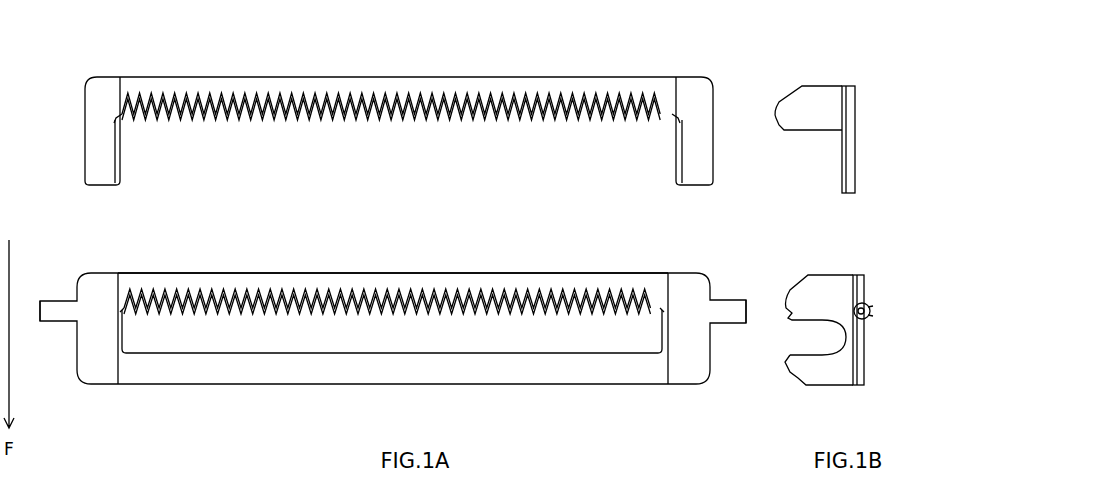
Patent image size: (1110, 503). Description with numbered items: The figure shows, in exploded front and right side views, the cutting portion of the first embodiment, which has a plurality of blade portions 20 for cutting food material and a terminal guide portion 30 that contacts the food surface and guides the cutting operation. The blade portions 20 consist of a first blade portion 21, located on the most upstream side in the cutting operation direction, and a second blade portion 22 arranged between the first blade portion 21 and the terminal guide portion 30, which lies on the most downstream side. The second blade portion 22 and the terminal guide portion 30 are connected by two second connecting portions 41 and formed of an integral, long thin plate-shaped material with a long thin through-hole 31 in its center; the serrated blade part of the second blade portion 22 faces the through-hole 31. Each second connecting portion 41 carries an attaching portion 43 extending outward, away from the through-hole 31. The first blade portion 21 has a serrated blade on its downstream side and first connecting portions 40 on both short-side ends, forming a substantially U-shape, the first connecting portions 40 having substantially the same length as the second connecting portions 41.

In FIG. 1A, the blade portions 20 is at (380, 83).
In FIG. 1A, the first blade portion 21 is at (575, 86).
In FIG. 1B, the first blade portion 21 is at (806, 100).
In FIG. 1A, the second blade portion 22 is at (474, 285).
In FIG. 1B, the second blade portion 22 is at (818, 298).
In FIG. 1A, the terminal guide portion 30 is at (562, 374).
In FIG. 1B, the terminal guide portion 30 is at (834, 380).
In FIG. 1A, the through-hole 31 is at (437, 347).
In FIG. 1A, the first connecting portions 40 is at (95, 97).
In FIG. 1B, the first connecting portions 40 is at (851, 166).
In FIG. 1A, the second connecting portions 41 is at (90, 360).
In FIG. 1B, the second connecting portions 41 is at (862, 365).
In FIG. 1A, the attaching portion 43 is at (57, 307).
In FIG. 1B, the attaching portion 43 is at (871, 312).